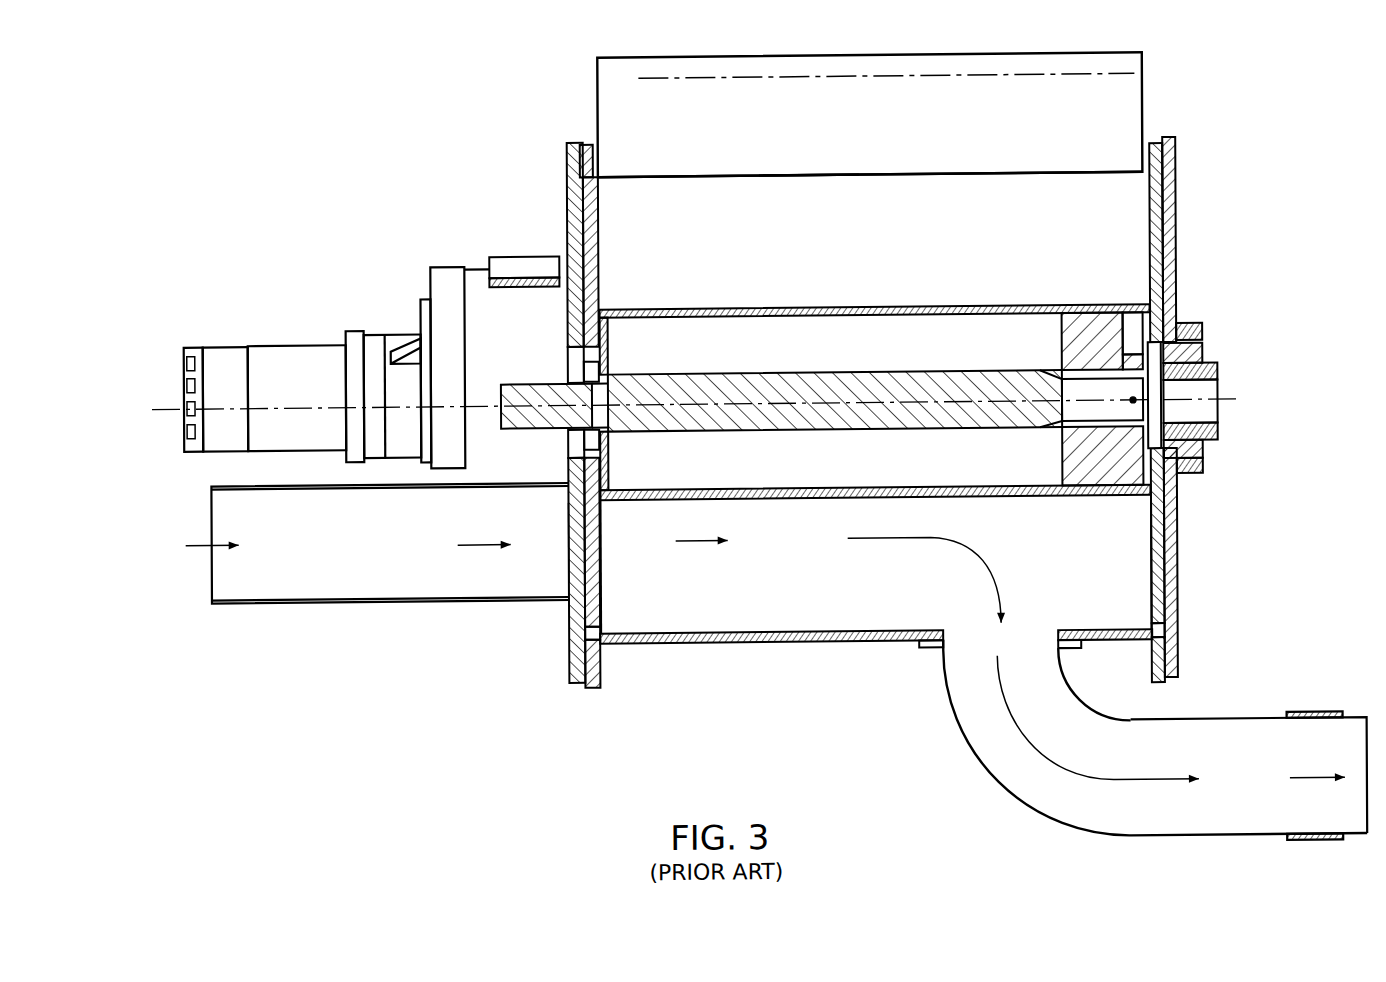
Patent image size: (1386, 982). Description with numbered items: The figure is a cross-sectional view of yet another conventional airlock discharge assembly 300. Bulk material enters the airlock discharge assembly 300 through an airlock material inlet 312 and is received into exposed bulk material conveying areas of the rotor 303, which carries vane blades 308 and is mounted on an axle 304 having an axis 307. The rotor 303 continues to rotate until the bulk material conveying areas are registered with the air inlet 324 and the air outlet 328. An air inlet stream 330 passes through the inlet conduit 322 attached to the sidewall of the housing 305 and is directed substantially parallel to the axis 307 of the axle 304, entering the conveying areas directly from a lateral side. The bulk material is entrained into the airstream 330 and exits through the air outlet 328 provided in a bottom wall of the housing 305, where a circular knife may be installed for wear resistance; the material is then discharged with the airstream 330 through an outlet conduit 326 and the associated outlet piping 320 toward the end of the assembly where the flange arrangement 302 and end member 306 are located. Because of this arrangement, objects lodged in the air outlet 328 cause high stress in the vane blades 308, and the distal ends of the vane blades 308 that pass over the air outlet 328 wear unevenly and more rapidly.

The airlock discharge assembly 300 is at (1238, 386).
The end flange assembly 302 is at (1185, 241).
The rotor 303 is at (995, 164).
The axle 304 is at (530, 376).
The housing 305 is at (568, 212).
The inner cylinder / stator 306 is at (962, 303).
The axis 307 is at (286, 401).
The vane blades 308 is at (688, 185).
The airlock material inlet 312 is at (803, 162).
The outlet pipe 320 is at (1243, 711).
The inlet conduit 322 is at (262, 600).
The air inlet 324 is at (558, 539).
The outlet conduit 326 is at (1147, 840).
The air outlet 328 is at (997, 654).
The air inlet stream 330 is at (190, 539).